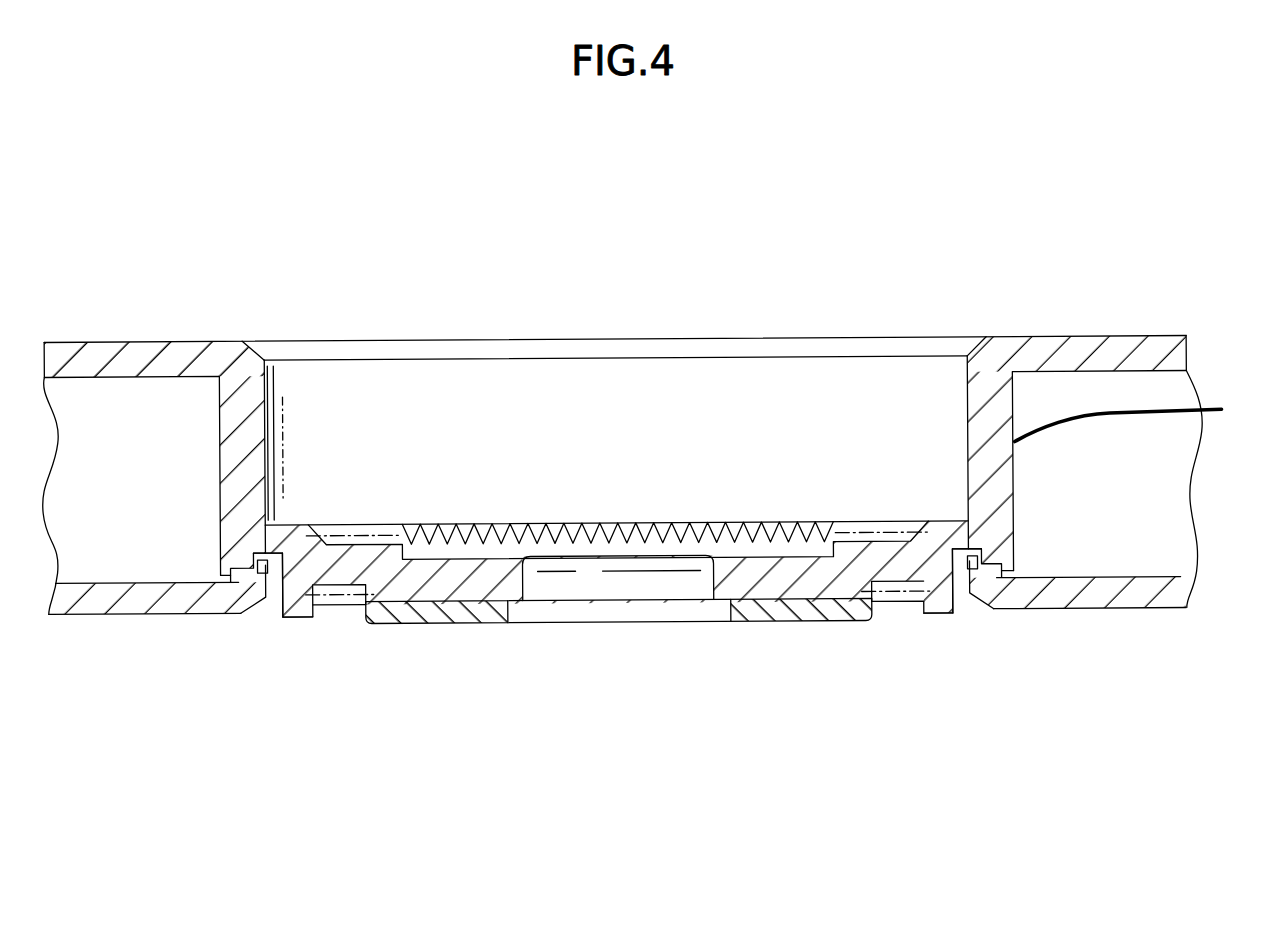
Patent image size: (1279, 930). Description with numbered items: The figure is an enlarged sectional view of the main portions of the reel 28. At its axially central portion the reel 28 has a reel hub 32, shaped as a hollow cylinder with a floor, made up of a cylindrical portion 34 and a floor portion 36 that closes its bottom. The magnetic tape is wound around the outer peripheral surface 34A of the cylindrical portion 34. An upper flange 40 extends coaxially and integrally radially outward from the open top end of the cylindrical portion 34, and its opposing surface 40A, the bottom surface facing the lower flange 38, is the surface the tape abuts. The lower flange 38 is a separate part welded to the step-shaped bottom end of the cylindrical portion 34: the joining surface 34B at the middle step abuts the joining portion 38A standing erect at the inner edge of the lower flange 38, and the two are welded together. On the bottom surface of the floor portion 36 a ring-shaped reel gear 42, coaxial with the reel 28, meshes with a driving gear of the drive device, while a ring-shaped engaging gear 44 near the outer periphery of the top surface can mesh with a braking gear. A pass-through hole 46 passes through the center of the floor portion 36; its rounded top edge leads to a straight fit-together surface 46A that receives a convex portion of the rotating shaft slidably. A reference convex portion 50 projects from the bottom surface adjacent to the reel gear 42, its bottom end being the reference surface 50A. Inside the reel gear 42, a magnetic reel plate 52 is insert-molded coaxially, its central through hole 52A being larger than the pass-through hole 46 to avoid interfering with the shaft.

The reel 28 is at (1025, 245).
The reel hub 32 is at (968, 270).
The cylindrical portion 34 is at (253, 464).
The outer peripheral surface 34A is at (1145, 416).
The joining surface 34B is at (243, 611).
The floor portion 36 is at (861, 555).
The lower flange 38 is at (113, 593).
The joining portion 38A is at (262, 575).
The upper flange 40 is at (171, 347).
The opposing surface 40A is at (110, 394).
The reel gear 42 is at (342, 605).
The engaging gear 44 is at (473, 529).
The pass-through hole 46 is at (605, 584).
The fit-together surface 46A is at (540, 588).
The reference convex portion 50 is at (280, 613).
The reference surface 50A is at (297, 622).
The reel plate 52 is at (773, 616).
The through hole 52A is at (715, 623).